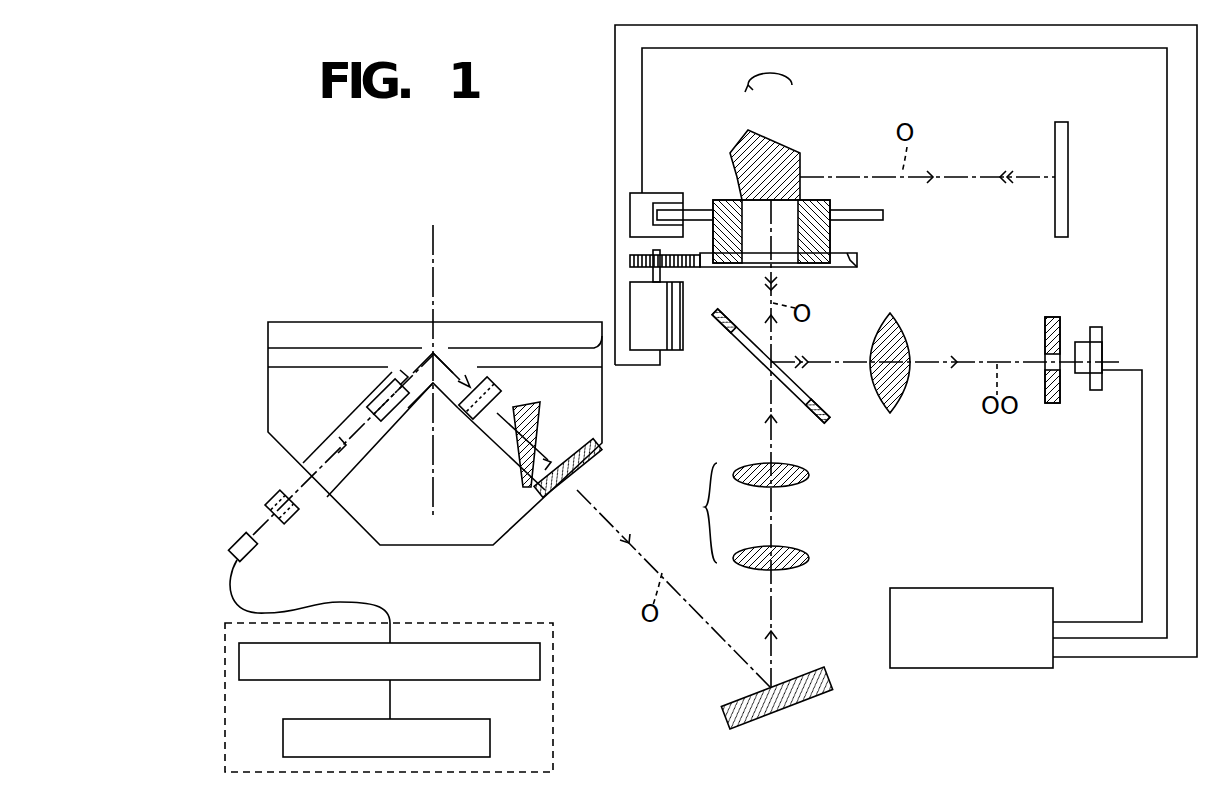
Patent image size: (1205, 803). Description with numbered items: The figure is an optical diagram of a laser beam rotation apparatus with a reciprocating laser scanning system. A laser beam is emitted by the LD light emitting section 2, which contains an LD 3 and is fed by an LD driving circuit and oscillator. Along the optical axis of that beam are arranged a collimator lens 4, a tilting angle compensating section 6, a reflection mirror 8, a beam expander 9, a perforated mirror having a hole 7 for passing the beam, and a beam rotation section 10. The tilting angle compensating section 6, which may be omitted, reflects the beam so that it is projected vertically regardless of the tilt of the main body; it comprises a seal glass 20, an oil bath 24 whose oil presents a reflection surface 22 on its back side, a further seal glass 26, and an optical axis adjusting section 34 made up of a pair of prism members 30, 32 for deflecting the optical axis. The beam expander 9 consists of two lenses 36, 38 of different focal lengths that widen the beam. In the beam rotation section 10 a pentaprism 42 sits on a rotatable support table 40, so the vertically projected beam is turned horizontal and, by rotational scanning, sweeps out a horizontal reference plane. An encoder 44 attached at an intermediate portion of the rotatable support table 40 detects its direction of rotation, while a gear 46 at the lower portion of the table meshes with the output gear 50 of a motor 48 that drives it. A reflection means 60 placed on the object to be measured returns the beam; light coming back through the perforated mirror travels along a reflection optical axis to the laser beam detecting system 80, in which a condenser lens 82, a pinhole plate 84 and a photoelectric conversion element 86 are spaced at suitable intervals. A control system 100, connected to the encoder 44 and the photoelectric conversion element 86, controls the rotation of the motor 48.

The LD light emitting section 2 is at (553, 713).
The LD 3 is at (255, 553).
The collimator lens 4 is at (300, 517).
The tilting angle compensating section 6 is at (480, 553).
The hole 7 is at (740, 355).
The reflection mirror 8 is at (818, 693).
The beam expander 9 is at (779, 526).
The beam rotation section 10 is at (868, 254).
The seal glass 20 is at (403, 408).
The reflection surface 22 is at (318, 350).
The oil bath 24 is at (330, 335).
The seal glass 26 is at (493, 380).
The prism member 30 is at (527, 490).
The prism member 32 is at (598, 445).
The optical axis adjusting section 34 is at (568, 510).
The lens 36 is at (810, 557).
The lens 38 is at (810, 472).
The rotatable support table 40 is at (820, 230).
The pentaprism 42 is at (738, 143).
The encoder 44 is at (633, 220).
The gear 46 is at (700, 262).
The motor 48 is at (642, 312).
The output gear 50 is at (630, 260).
The reflection means 60 is at (1070, 143).
The laser beam detecting system 80 is at (1010, 372).
The condenser lens 82 is at (900, 320).
The pinhole plate 84 is at (1060, 317).
The photoelectric conversion element 86 is at (1102, 340).
The control system 100 is at (1008, 668).